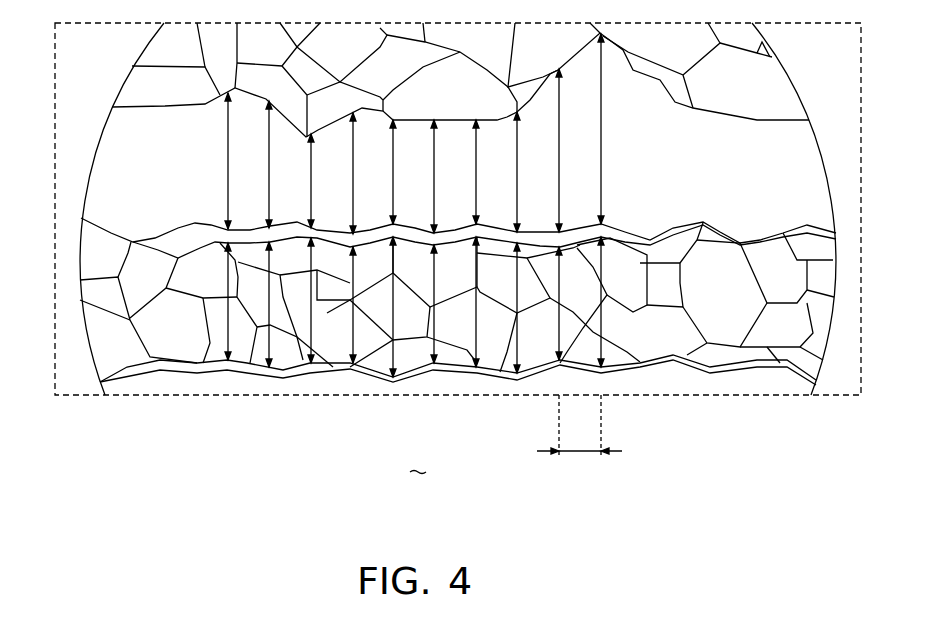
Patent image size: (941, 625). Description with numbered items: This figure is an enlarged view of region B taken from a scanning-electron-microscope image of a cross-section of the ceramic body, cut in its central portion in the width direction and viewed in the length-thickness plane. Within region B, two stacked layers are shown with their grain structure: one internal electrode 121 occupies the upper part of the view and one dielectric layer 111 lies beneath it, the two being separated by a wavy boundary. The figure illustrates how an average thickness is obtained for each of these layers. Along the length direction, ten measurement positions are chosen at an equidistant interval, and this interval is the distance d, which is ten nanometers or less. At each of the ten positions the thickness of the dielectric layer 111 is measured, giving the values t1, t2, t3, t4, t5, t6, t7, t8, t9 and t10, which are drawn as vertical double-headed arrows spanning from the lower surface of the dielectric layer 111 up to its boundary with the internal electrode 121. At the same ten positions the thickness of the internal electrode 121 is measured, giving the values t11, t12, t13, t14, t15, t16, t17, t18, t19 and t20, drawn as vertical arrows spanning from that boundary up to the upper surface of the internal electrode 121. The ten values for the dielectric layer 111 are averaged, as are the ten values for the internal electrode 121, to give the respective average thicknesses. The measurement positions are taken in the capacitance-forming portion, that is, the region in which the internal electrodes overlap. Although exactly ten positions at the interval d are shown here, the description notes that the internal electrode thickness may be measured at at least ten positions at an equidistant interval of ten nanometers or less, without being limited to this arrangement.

The internal electrode 121 is at (800, 165).
The dielectric layer 111 is at (818, 283).
The thickness of dielectric layer at first position t1 is at (237, 301).
The thickness of dielectric layer at second position t2 is at (278, 304).
The thickness of dielectric layer at third position t3 is at (320, 300).
The thickness of dielectric layer at fourth position t4 is at (362, 305).
The thickness of dielectric layer at fifth position t5 is at (402, 307).
The thickness of dielectric layer at sixth position t6 is at (444, 304).
The thickness of dielectric layer at seventh position t7 is at (485, 302).
The thickness of dielectric layer at eighth position t8 is at (526, 308).
The thickness of dielectric layer at ninth position t9 is at (568, 303).
The thickness of dielectric layer at tenth position t10 is at (614, 302).
The thickness of internal electrode at first position t11 is at (241, 161).
The thickness of internal electrode at second position t12 is at (282, 164).
The thickness of internal electrode at third position t13 is at (324, 181).
The thickness of internal electrode at fourth position t14 is at (366, 173).
The thickness of internal electrode at fifth position t15 is at (406, 172).
The thickness of internal electrode at sixth position t16 is at (447, 176).
The thickness of internal electrode at seventh position t17 is at (489, 172).
The thickness of internal electrode at eighth position t18 is at (530, 172).
The thickness of internal electrode at ninth position t19 is at (572, 150).
The thickness of internal electrode at tenth position t20 is at (614, 129).
The region B is at (418, 461).
The equidistant interval d is at (579, 437).